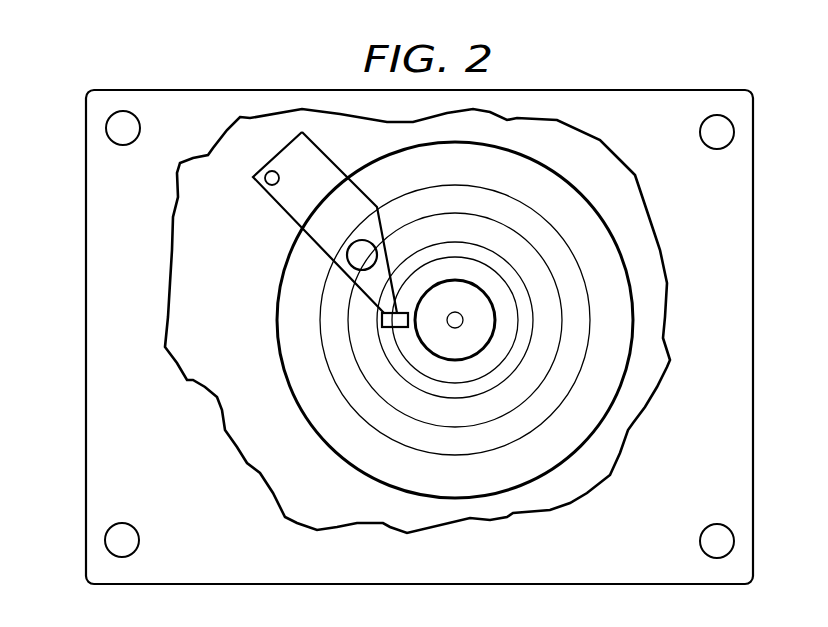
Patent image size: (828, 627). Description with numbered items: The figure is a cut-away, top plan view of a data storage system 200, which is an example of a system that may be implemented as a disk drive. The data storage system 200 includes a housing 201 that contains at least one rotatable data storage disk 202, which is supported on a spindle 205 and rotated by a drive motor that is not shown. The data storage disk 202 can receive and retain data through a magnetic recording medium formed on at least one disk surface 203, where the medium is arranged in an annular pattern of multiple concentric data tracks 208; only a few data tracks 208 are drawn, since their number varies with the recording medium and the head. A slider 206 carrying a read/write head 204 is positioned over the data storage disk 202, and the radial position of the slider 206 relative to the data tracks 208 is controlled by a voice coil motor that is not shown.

The data storage system 200 is at (592, 70).
The housing 201 is at (86, 335).
The data storage disk 202 is at (277, 320).
The disk surface 203 is at (290, 285).
The read/write head 204 is at (382, 320).
The spindle 205 is at (460, 326).
The slider 206 is at (327, 172).
The data tracks 208 is at (533, 212).